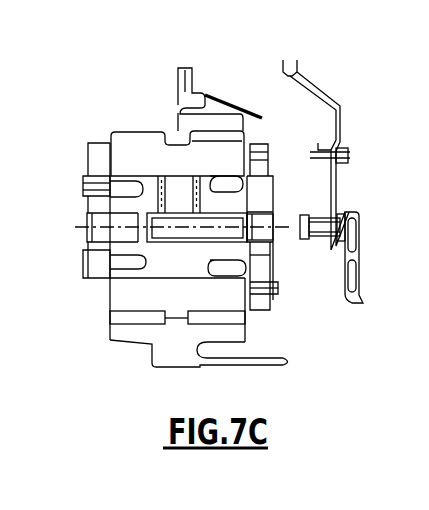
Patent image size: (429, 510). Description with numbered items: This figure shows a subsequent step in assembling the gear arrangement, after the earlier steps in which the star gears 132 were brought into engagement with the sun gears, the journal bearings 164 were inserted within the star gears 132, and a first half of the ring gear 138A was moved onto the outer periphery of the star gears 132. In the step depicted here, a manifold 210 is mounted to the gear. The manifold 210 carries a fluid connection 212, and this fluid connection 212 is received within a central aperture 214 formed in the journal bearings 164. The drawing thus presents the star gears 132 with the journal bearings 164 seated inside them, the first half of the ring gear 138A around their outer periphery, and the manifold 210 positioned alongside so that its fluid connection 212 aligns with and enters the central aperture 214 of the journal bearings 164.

The star gear 132 is at (120, 155).
The journal bearing 164 is at (88, 205).
The first half of the ring gear 138A is at (212, 114).
The manifold 210 is at (340, 105).
The fluid connection 212 is at (302, 243).
The central aperture 214 is at (262, 222).